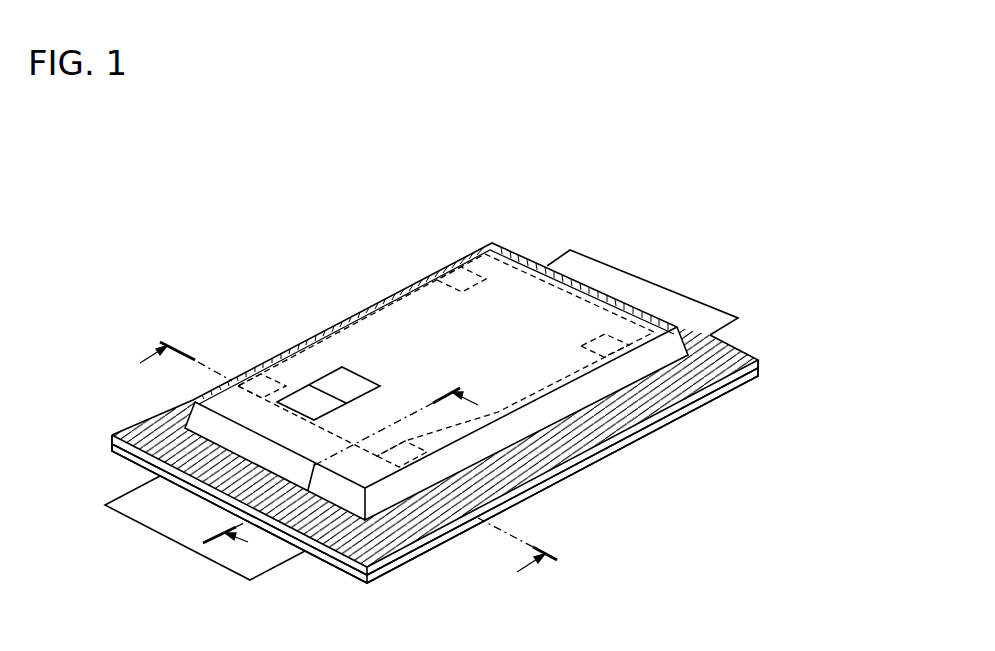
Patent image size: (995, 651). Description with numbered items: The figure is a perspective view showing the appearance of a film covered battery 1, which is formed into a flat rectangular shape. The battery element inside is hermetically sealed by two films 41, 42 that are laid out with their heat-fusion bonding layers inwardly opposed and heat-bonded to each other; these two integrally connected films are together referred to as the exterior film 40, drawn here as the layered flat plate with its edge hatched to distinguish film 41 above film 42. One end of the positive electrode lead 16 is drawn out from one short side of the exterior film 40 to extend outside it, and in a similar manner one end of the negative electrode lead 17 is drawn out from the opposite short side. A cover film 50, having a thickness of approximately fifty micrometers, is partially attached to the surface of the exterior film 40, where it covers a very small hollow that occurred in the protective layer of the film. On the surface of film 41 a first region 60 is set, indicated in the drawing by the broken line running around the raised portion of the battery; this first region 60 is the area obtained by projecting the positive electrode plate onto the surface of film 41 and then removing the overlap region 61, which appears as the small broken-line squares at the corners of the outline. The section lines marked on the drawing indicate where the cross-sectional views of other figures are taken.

The film covered battery 1 is at (480, 218).
The positive electrode lead 16 is at (148, 510).
The negative electrode lead 17 is at (652, 290).
The exterior film 40 is at (501, 450).
The film 41 is at (760, 361).
The film 42 is at (475, 475).
The cover film 50 is at (338, 383).
The first region 60 is at (520, 258).
The overlap region 61 is at (457, 278).